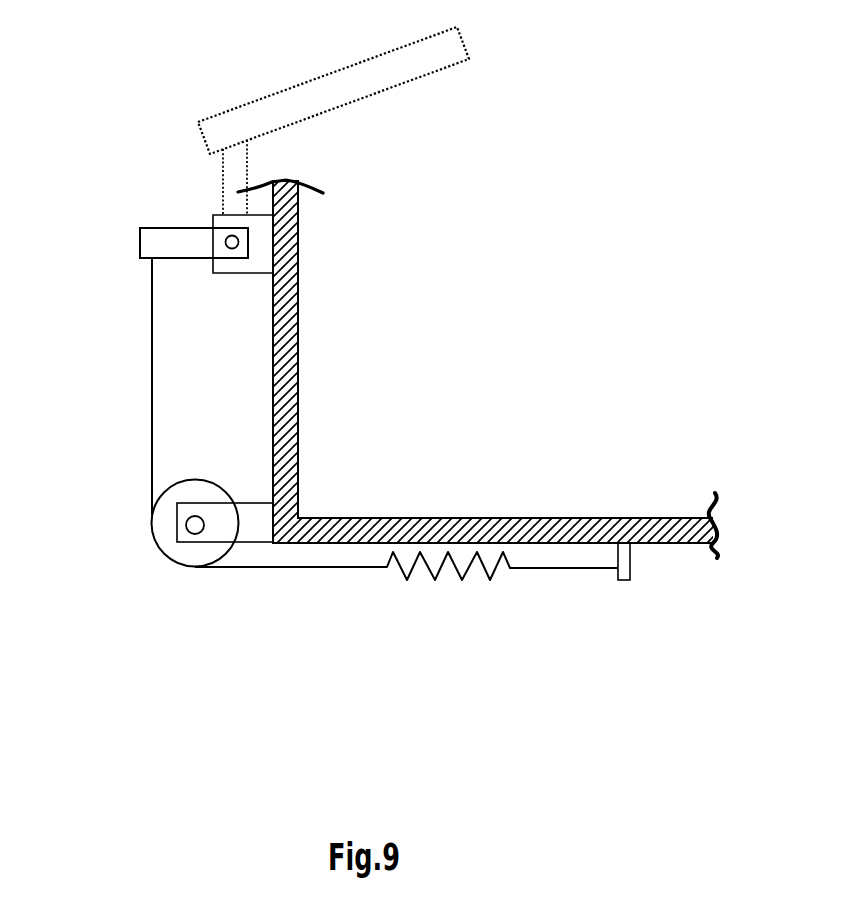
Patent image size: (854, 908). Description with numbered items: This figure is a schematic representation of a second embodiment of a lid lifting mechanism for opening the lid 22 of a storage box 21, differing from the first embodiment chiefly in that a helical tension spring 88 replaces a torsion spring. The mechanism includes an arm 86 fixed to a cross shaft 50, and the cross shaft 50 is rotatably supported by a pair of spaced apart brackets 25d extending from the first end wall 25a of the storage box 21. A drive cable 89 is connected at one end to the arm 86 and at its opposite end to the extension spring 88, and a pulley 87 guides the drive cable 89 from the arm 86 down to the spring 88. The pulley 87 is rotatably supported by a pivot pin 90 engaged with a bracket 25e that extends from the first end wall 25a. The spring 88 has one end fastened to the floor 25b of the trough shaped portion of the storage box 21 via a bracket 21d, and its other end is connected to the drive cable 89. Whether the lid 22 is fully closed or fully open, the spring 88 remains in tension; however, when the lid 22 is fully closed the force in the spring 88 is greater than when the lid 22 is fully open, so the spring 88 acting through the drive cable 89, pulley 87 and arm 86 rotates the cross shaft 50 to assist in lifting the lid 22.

The lid 22 is at (202, 110).
The cross shaft 50 is at (222, 229).
The arm 86 is at (140, 245).
The bracket 25d is at (245, 272).
The drive cable 89 is at (152, 412).
The first end wall 25a is at (273, 393).
The storage box 21 is at (447, 369).
The floor 25b is at (502, 517).
The bracket 25e is at (247, 503).
The pivot pin 90 is at (186, 524).
The pulley 87 is at (155, 541).
The helical tension spring 88 is at (427, 570).
The bracket 21d is at (632, 580).